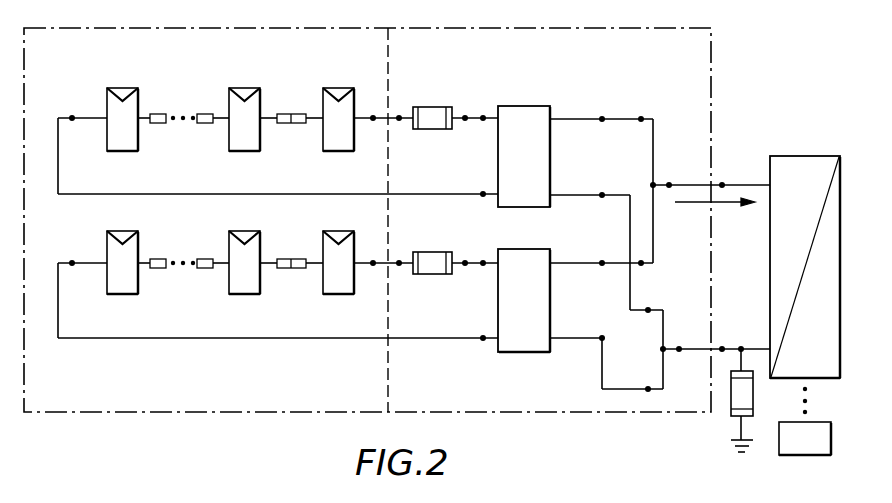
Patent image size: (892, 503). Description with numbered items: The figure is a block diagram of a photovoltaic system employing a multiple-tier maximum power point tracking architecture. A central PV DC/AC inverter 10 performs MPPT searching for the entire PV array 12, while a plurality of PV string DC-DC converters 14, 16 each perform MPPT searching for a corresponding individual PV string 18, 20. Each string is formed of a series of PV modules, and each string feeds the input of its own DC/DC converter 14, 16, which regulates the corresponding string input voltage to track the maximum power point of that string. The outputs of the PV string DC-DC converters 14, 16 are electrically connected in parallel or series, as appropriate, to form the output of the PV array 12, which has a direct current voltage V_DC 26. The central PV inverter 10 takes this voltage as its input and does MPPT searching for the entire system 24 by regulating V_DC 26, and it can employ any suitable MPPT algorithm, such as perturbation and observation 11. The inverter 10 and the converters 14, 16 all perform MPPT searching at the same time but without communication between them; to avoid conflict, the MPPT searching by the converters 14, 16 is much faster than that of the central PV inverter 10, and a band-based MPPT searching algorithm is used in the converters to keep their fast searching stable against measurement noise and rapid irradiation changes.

The central PV DC/AC inverter 10 is at (807, 155).
The perturbation and observation (P&O) 11 is at (792, 457).
The PV array 12 is at (127, 420).
The PV string DC-DC converter 14 is at (519, 106).
The PV string DC-DC converter 16 is at (528, 353).
The PV string 18 is at (272, 129).
The PV string 20 is at (272, 273).
The system 24 is at (625, 450).
The V_DC 26 is at (702, 148).